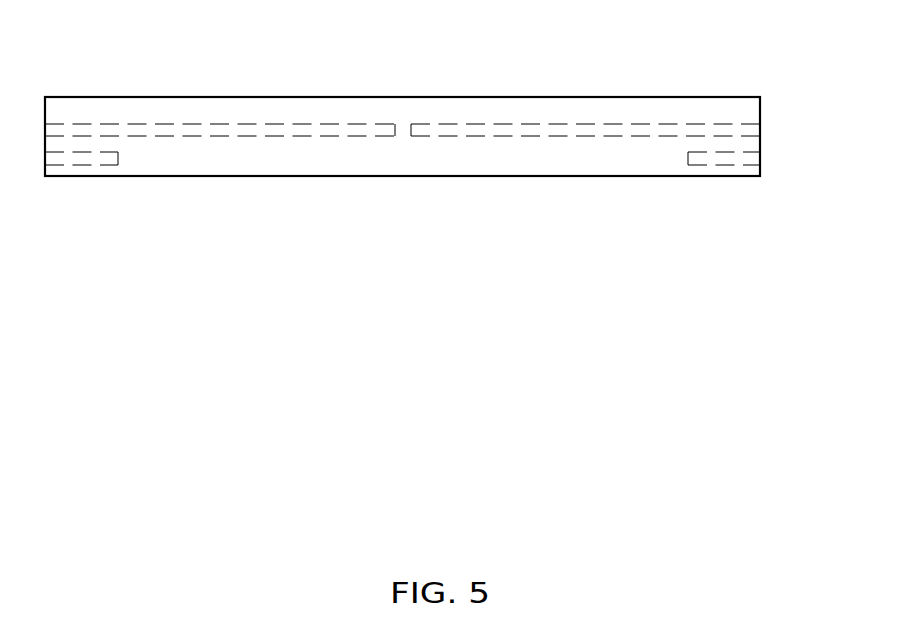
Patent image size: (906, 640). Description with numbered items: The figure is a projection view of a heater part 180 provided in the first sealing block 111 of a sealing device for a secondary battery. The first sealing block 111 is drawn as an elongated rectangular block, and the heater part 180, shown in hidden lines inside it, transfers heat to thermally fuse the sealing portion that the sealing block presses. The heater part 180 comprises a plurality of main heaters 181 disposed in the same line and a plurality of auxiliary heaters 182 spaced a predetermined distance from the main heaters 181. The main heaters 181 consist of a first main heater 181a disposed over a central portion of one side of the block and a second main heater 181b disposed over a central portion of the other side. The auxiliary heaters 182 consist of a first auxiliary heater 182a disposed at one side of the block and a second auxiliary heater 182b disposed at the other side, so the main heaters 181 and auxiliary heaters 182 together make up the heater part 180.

The first sealing block 111 is at (737, 94).
The heater part 180 is at (442, 282).
The main heaters 181 is at (402, 215).
The first main heater 181a is at (350, 135).
The second main heater 181b is at (435, 135).
The auxiliary heaters 182 is at (402, 296).
The first auxiliary heater 182a is at (93, 163).
The second auxiliary heater 182b is at (693, 163).